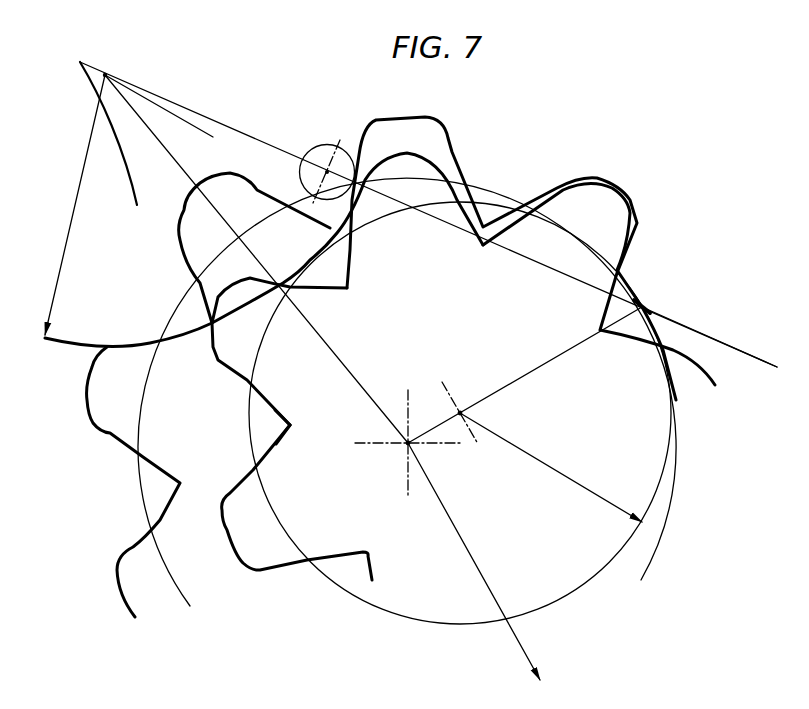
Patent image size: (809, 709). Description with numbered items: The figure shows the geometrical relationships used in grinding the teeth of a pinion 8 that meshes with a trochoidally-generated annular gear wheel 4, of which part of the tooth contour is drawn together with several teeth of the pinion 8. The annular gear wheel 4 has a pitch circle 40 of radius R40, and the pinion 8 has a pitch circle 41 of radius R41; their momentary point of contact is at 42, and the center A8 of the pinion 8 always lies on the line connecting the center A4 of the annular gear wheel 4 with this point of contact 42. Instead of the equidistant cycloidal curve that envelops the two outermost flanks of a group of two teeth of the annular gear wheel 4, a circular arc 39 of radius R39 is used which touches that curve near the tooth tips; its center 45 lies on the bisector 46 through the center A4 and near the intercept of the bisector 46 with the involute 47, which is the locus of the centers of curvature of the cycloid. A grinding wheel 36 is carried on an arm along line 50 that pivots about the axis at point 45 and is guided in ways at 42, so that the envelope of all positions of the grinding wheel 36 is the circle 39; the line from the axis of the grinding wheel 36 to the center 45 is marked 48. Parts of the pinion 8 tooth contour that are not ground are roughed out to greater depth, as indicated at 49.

The annular gear wheel 4 is at (112, 433).
The pinion 8 is at (256, 553).
The grinding wheel 36 is at (323, 160).
The circular arc 39 is at (70, 338).
The pitch circle of the annular gear wheel 40 is at (190, 600).
The pitch circle of the pinion 41 is at (410, 625).
The point of contact 42 is at (645, 303).
The center 45 is at (107, 73).
The bisector 46 is at (338, 356).
The involute 47 is at (207, 130).
The line through the grinding cylinder axis 48 is at (703, 333).
The roughed-out tooth contour part 49 is at (284, 440).
The line of the arm 50 is at (250, 136).
The center of the annular gear wheel A4 is at (405, 447).
The center of the pinion A8 is at (461, 411).
The radius of the circular arc R39 is at (75, 200).
The radius of the annular gear wheel pitch circle R40 is at (470, 553).
The radius of the pinion pitch circle R41 is at (580, 483).